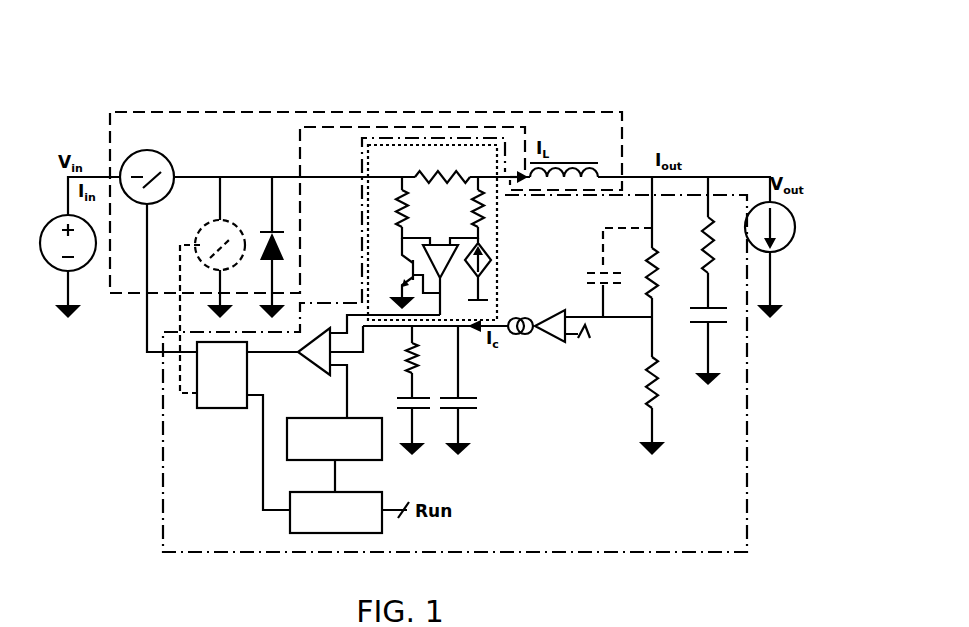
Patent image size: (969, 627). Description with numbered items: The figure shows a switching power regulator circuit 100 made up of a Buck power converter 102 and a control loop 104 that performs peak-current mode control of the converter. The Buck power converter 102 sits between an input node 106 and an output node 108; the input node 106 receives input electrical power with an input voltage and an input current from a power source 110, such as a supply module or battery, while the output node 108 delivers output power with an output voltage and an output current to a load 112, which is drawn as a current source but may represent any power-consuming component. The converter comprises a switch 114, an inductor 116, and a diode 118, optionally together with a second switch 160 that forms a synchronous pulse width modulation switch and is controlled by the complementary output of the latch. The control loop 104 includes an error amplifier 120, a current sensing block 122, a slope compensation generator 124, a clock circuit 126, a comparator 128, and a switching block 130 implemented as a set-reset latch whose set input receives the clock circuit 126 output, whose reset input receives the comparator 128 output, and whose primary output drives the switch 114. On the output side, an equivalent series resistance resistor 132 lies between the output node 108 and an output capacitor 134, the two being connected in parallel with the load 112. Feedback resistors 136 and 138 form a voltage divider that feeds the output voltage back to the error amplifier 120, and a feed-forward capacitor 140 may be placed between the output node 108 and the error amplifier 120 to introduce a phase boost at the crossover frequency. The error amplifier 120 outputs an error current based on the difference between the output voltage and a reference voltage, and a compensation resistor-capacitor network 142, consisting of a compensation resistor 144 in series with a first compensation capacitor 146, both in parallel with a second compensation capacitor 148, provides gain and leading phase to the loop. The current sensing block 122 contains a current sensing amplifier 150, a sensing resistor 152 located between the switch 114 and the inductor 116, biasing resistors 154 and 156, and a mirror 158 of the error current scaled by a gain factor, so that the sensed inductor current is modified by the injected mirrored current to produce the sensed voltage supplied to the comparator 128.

The switching power regulator circuit 100 is at (706, 86).
The Buck power converter 102 is at (422, 110).
The control loop 104 is at (562, 554).
The input node 106 is at (97, 170).
The output node 108 is at (732, 177).
The power source 110 is at (50, 217).
The load 112 is at (792, 228).
The switch 114 is at (155, 148).
The inductor 116 is at (577, 162).
The diode 118 is at (282, 242).
The error amplifier 120 is at (545, 342).
The current sensing block 122 is at (500, 290).
The slope compensation generator 124 is at (355, 461).
The clock circuit 126 is at (330, 534).
The comparator 128 is at (310, 364).
The switching block 130 is at (223, 410).
The equivalent series resistance (ESR) resistor 132 is at (703, 237).
The output capacitor 134 is at (722, 324).
The feedback resistor 136 is at (658, 245).
The feedback resistor 138 is at (657, 397).
The feed-forward capacitor 140 is at (611, 288).
The compensation resistor-capacitor network 142 is at (490, 372).
The compensation resistor 144 is at (418, 341).
The first compensation capacitor 146 is at (426, 416).
The second compensation capacitor 148 is at (467, 412).
The current sensing amplifier 150 is at (405, 256).
The sensing resistor 152 is at (415, 172).
The biasing resistor 154 is at (399, 197).
The biasing resistor 156 is at (485, 222).
The mirror of the error current 158 is at (492, 248).
The second switch 160 is at (207, 222).